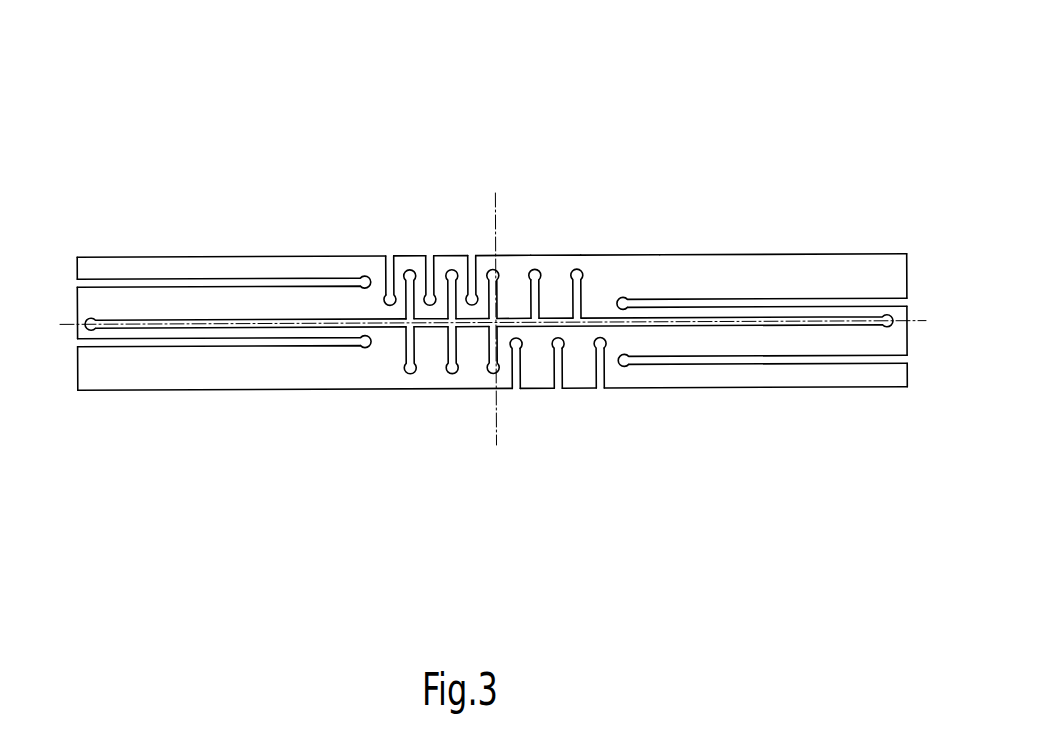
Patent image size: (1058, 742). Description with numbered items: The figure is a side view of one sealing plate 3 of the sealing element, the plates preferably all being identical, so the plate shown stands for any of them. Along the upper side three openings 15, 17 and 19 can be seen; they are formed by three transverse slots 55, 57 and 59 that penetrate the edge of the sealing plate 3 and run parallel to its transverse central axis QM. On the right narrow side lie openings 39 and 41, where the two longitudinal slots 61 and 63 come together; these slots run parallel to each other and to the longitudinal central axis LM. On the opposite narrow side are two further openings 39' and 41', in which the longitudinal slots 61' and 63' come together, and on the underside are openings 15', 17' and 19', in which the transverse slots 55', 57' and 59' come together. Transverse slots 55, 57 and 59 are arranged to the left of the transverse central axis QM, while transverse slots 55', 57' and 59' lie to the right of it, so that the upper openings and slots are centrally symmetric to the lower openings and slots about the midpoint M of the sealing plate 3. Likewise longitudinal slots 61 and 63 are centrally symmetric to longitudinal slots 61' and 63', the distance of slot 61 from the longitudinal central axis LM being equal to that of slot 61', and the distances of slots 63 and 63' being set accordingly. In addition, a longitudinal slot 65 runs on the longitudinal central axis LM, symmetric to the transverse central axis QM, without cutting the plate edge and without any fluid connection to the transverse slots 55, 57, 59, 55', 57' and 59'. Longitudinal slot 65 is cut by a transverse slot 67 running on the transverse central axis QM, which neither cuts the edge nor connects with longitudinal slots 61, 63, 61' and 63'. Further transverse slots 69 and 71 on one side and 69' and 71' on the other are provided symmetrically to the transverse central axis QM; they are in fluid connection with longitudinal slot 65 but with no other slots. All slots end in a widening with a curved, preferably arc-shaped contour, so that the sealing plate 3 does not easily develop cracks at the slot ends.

The sealing plate 3 is at (111, 236).
The opening 15 is at (375, 221).
The opening 17 is at (426, 214).
The opening 19 is at (494, 182).
The opening 15' is at (616, 421).
The opening 17' is at (560, 421).
The opening 19' is at (505, 435).
The opening 39 is at (908, 434).
The opening 41 is at (906, 224).
The opening 39' is at (59, 205).
The opening 41' is at (64, 424).
The transverse slot 55 is at (353, 228).
The transverse slot 57 is at (385, 187).
The transverse slot 59 is at (437, 176).
The transverse slot 55' is at (642, 464).
The transverse slot 57' is at (589, 470).
The transverse slot 59' is at (523, 483).
The longitudinal slot 61 is at (762, 248).
The longitudinal slot 63 is at (762, 409).
The longitudinal slot 65 is at (228, 322).
The longitudinal slot 61' is at (224, 400).
The longitudinal slot 63' is at (223, 230).
The transverse slot 67 is at (523, 268).
The transverse slot 69 is at (342, 430).
The transverse slot 71 is at (394, 444).
The transverse slot 69' is at (689, 197).
The transverse slot 71' is at (635, 236).
The midpoint M is at (536, 268).
The longitudinal central axis LM is at (798, 322).
The transverse central axis QM is at (496, 222).